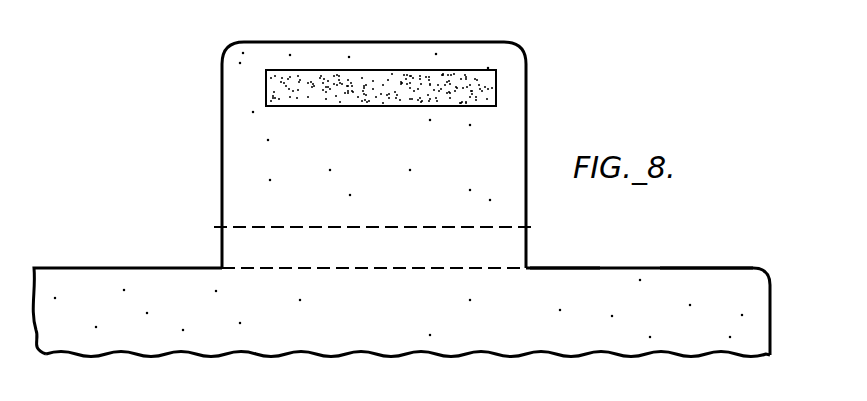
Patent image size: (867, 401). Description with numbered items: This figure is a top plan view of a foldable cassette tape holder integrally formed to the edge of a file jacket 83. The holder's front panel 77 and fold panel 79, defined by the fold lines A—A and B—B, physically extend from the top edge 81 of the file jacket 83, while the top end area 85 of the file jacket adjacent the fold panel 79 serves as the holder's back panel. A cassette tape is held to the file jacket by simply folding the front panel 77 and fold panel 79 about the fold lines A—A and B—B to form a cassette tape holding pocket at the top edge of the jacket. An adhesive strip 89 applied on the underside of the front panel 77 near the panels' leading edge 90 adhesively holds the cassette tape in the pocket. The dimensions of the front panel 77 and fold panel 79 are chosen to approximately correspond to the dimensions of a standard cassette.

The front panel 77 is at (384, 155).
The fold panel 79 is at (381, 258).
The top edge 81 is at (567, 266).
The file jacket 83 is at (677, 280).
The top end area 85 is at (387, 315).
The adhesive strip 89 is at (443, 78).
The leading edge 90 is at (389, 50).